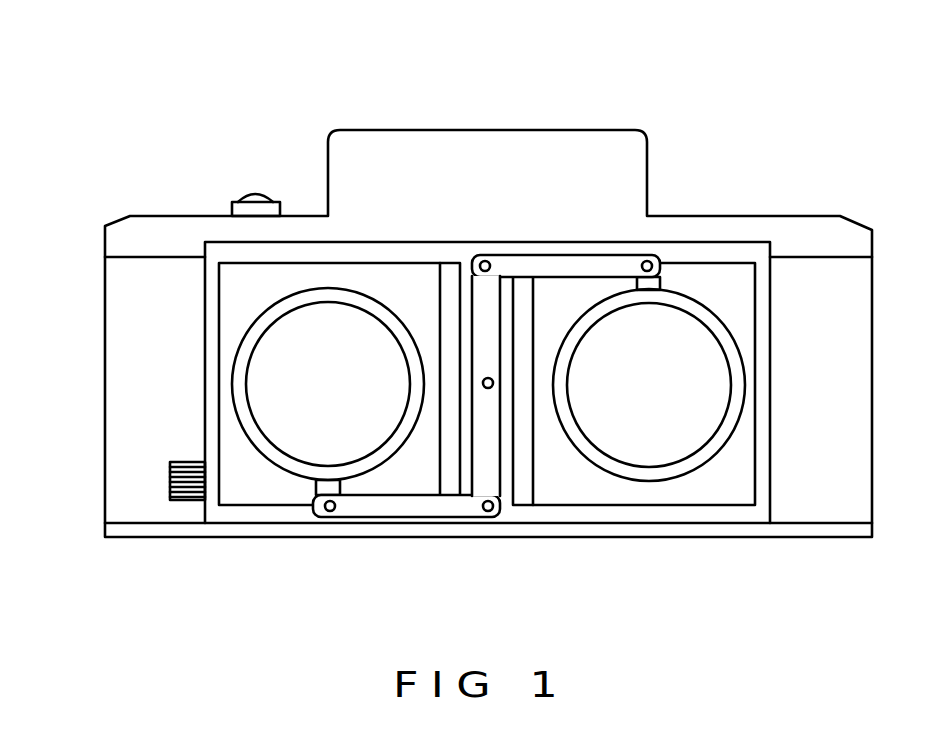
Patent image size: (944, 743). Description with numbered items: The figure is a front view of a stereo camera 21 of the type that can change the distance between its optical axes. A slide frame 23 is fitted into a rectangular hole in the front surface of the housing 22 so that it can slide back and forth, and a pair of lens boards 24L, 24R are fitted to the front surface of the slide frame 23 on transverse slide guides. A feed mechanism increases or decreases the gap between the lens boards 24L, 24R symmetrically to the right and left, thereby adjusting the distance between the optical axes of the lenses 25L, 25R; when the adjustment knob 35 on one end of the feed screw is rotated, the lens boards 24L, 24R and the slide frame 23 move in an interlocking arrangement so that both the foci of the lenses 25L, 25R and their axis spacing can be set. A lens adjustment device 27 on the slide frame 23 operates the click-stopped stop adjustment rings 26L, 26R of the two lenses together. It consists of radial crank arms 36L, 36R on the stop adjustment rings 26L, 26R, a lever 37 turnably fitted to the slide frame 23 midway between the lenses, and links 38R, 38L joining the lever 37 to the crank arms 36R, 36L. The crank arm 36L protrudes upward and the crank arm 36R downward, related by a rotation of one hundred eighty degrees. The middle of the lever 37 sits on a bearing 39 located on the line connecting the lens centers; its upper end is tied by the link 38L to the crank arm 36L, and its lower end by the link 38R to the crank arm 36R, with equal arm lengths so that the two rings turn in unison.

The stereo camera 21 is at (223, 139).
The housing 22 is at (125, 292).
The slide frame 23 is at (203, 345).
The lens board 24R is at (303, 275).
The lens board 24L is at (727, 475).
The lens 25R is at (282, 352).
The lens 25L is at (643, 447).
The stop adjustment ring 26R is at (273, 463).
The stop adjustment ring 26L is at (703, 305).
The lens adjustment device 27 is at (535, 331).
The adjustment knob 35 is at (190, 501).
The crank arm 36R is at (313, 488).
The crank arm 36L is at (660, 283).
The lever 37 is at (482, 322).
The link 38R is at (397, 503).
The link 38L is at (615, 253).
The bearing 39 is at (492, 390).